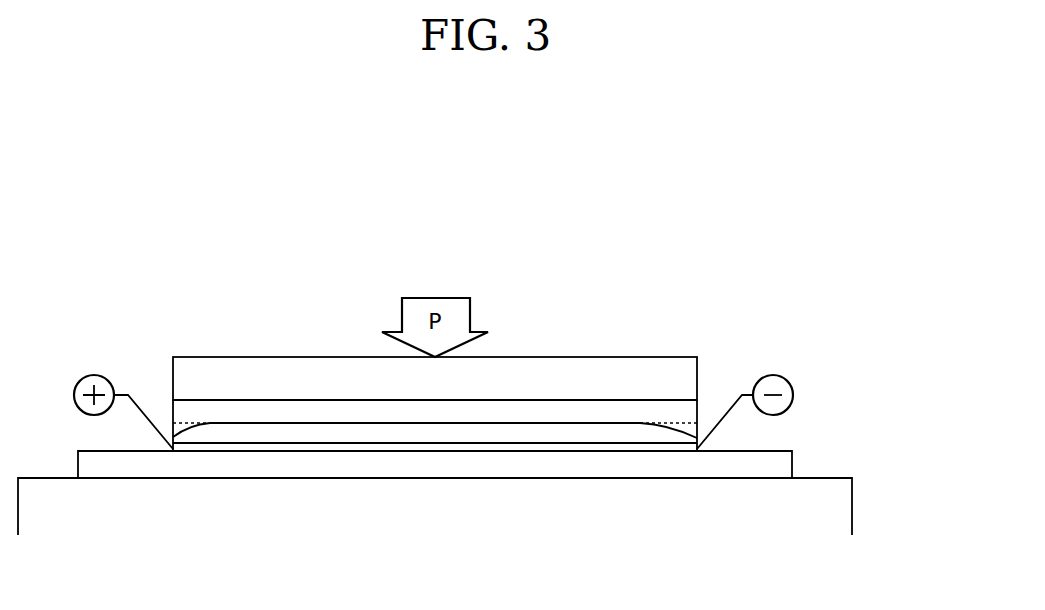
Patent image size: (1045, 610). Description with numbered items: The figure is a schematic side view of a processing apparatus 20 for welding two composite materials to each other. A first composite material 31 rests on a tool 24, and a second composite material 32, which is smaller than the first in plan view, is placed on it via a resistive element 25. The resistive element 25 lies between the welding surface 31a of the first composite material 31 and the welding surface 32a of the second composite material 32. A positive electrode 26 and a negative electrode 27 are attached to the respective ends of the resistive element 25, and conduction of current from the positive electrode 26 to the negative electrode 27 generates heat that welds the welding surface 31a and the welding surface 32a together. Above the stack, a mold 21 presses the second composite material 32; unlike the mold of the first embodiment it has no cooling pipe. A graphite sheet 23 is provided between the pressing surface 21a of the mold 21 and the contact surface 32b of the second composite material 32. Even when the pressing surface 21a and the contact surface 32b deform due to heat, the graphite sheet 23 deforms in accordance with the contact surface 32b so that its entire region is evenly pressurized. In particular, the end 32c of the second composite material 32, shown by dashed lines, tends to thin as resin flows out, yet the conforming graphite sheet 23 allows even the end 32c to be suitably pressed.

The processing apparatus 20 is at (731, 226).
The mold 21 is at (515, 372).
The pressing surface 21a is at (585, 405).
The graphite sheet 23 is at (666, 410).
The tool 24 is at (833, 512).
The resistive element 25 is at (465, 447).
The positive electrode 26 is at (94, 375).
The negative electrode 27 is at (773, 375).
The first composite material 31 is at (385, 465).
The welding surface 31a is at (620, 447).
The second composite material 32 is at (293, 431).
The welding surface 32a is at (323, 445).
The contact surface 32b is at (268, 425).
The end 32c is at (178, 424).